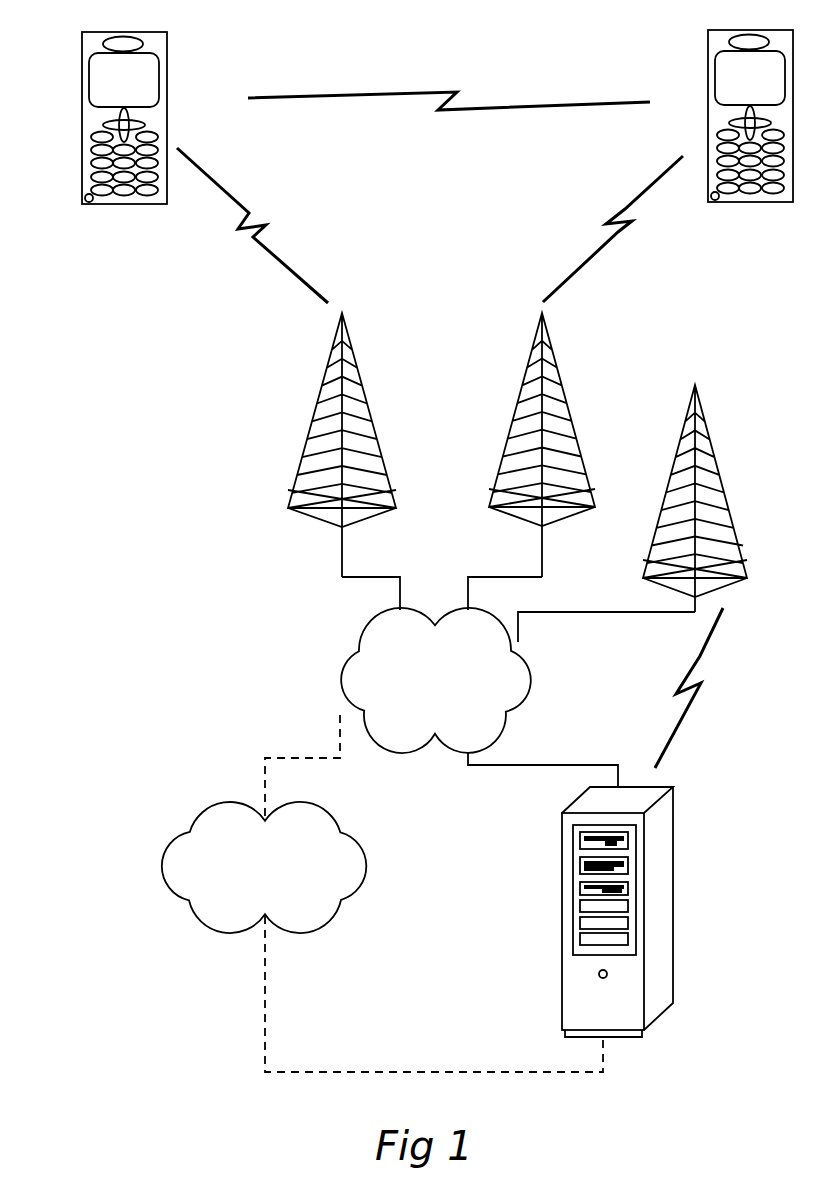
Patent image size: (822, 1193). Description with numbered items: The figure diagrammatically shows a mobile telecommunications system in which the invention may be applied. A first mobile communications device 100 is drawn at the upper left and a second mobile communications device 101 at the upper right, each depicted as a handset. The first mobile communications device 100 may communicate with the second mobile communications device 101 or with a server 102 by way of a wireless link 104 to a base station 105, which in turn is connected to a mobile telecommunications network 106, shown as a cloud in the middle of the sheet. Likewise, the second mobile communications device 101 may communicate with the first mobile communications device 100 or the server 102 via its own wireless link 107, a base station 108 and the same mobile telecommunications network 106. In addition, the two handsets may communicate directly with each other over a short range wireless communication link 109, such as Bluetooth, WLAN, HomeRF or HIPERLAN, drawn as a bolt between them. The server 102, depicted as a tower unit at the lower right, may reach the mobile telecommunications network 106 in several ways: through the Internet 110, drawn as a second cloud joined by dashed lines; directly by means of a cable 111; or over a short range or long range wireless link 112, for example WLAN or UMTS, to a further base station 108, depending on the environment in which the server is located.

The first mobile communications device 100 is at (84, 48).
The second mobile communications device 101 is at (711, 45).
The server 102 is at (573, 1000).
The wireless link 104 is at (250, 210).
The base station 105 is at (329, 372).
The mobile telecommunications network 106 is at (436, 680).
The wireless link 107 is at (624, 210).
The base station 108 is at (530, 372).
The short range wireless communication link 109 is at (441, 93).
The Internet 110 is at (264, 867).
The cable 111 is at (576, 765).
The wireless link 112 is at (709, 650).